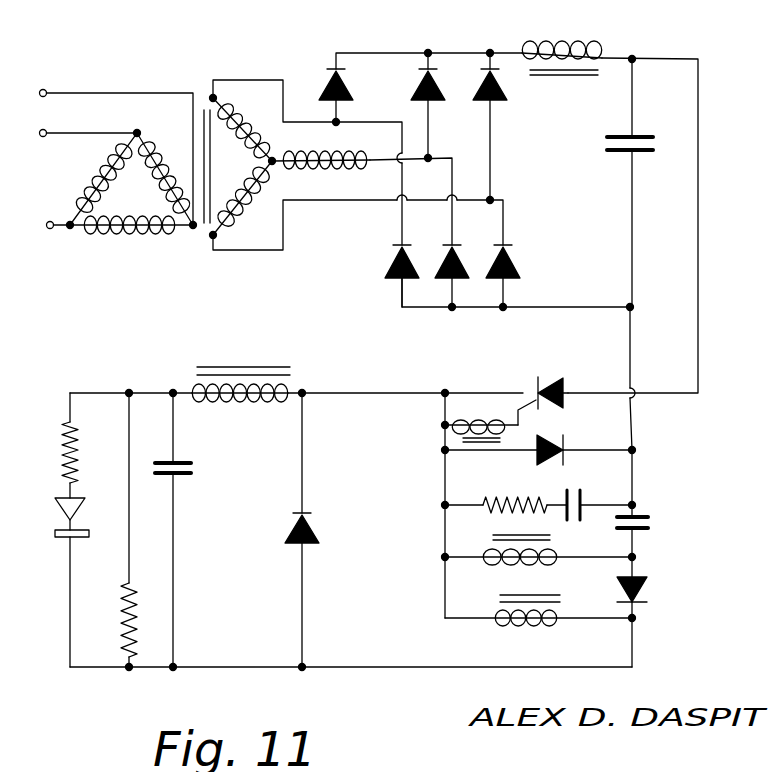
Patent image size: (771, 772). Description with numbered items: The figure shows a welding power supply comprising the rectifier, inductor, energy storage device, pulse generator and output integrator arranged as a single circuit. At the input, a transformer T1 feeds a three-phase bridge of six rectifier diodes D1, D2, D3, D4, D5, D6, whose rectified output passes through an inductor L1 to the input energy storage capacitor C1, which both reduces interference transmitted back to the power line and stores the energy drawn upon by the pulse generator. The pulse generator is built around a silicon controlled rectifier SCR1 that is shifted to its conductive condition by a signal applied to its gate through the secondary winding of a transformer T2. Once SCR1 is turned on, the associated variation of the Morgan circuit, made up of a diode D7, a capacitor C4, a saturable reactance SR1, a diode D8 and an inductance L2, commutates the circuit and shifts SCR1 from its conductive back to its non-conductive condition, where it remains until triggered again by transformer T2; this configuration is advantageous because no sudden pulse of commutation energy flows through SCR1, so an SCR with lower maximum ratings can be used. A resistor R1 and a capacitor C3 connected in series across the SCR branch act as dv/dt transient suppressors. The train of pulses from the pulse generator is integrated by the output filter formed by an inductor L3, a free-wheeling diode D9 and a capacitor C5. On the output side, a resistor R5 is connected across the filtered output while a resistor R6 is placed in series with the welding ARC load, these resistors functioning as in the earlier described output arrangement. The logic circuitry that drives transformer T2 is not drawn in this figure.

The transformer T1 is at (216, 142).
The diode D1 is at (322, 95).
The diode D2 is at (413, 105).
The diode D3 is at (502, 126).
The diode D4 is at (389, 264).
The diode D5 is at (441, 265).
The diode D6 is at (493, 265).
The inductor L1 is at (562, 45).
The input energy storage capacitor C1 is at (637, 183).
The SCR SCR1 is at (546, 388).
The transformer T2 is at (480, 419).
The diode D7 is at (540, 448).
The resistor R1 is at (506, 493).
The capacitor C3 is at (601, 495).
The capacitor C4 is at (649, 503).
The saturable reactance SR1 is at (540, 550).
The diode D8 is at (648, 612).
The inductance L2 is at (540, 631).
The output filter inductor L3 is at (241, 401).
The output filter capacitor C5 is at (182, 530).
The output filter diode D9 is at (316, 530).
The resistor R5 is at (110, 530).
The resistor R6 is at (47, 445).
The welding arc ARC is at (48, 582).